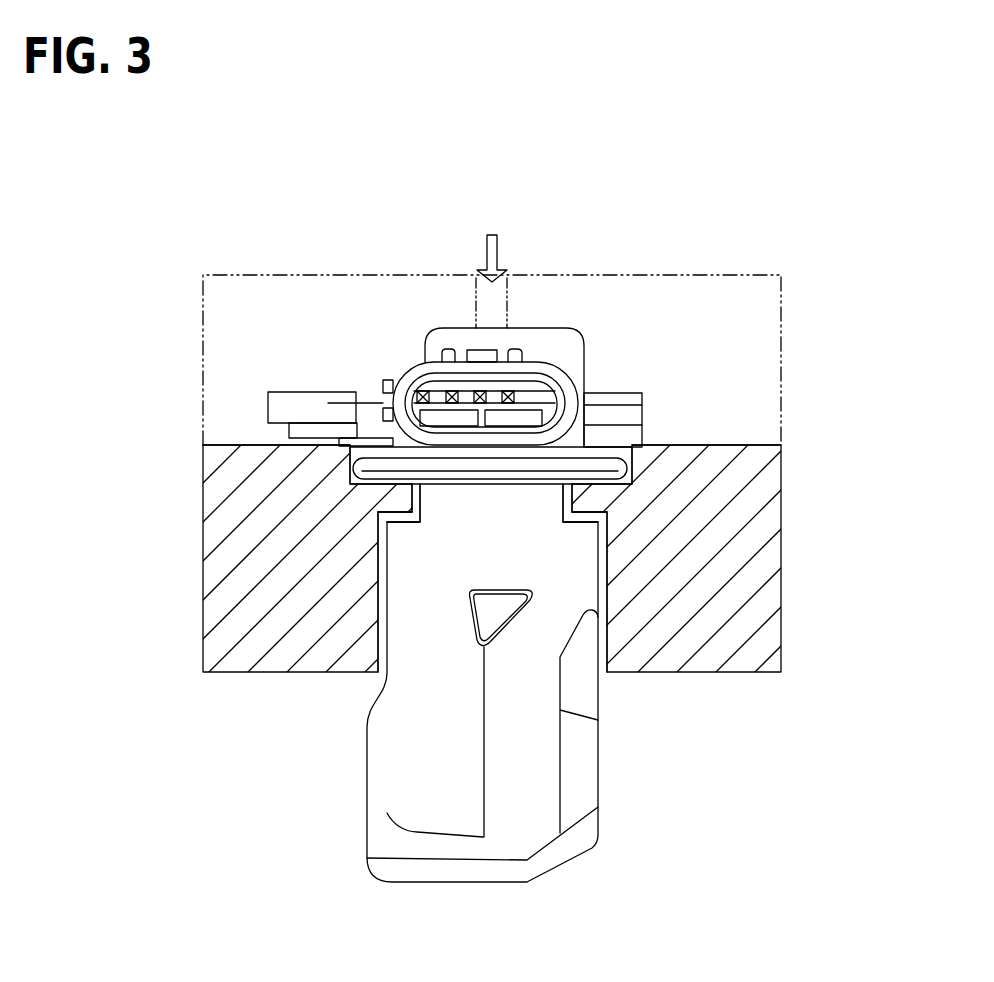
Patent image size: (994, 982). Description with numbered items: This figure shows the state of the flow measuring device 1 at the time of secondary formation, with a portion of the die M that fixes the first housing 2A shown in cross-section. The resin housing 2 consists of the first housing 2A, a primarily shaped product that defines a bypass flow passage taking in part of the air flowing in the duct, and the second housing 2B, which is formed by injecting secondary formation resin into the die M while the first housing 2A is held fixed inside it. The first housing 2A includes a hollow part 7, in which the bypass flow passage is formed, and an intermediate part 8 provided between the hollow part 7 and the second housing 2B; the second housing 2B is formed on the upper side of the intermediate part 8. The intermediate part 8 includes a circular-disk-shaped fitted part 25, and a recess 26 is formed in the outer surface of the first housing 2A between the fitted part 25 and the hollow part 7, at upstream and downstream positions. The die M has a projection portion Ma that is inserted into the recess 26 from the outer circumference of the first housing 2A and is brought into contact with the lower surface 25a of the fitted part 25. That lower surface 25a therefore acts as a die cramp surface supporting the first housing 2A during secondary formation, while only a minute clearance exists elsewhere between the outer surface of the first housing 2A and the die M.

The flow measuring device 1 is at (641, 859).
The housing 2 is at (470, 553).
The first housing 2A is at (396, 747).
The second housing 2B is at (567, 348).
The hollow part 7 is at (578, 693).
The intermediate part 8 is at (502, 508).
The fitted part 25 is at (370, 454).
The lower surface of the fitted part 25a is at (390, 498).
The recess 26 is at (378, 530).
The die M is at (763, 487).
The projection portion Ma is at (643, 445).